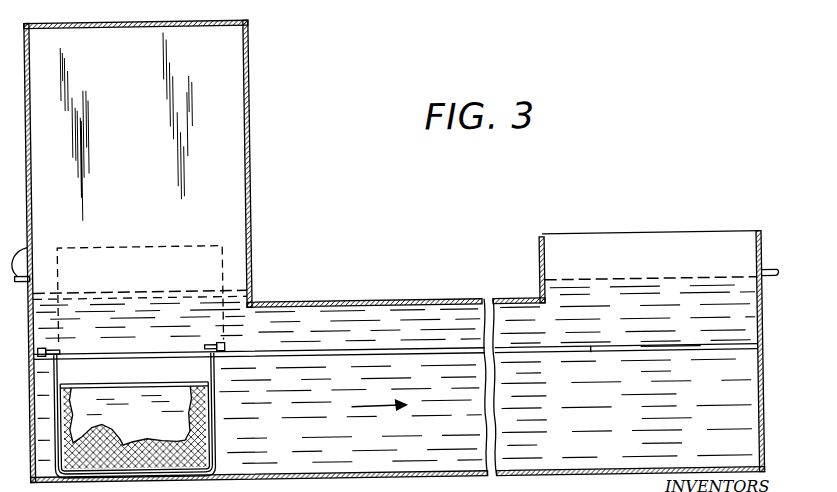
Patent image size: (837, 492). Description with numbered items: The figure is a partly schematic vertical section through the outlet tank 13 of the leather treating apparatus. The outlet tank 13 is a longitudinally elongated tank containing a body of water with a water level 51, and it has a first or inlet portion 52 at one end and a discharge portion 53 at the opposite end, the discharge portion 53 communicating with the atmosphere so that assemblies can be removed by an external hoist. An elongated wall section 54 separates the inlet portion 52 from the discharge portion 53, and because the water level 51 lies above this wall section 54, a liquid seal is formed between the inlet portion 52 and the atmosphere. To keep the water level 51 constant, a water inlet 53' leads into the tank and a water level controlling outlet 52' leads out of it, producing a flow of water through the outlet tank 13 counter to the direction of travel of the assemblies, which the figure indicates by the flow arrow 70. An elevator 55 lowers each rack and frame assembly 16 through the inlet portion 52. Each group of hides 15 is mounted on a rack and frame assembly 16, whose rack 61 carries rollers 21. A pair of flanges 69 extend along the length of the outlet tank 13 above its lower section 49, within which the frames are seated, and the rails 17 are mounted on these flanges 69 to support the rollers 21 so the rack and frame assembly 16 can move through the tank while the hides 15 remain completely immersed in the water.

The outlet tank 13 is at (253, 126).
The inlet portion 52 is at (127, 126).
The water level controlling outlet 52' is at (42, 249).
The elevator 55 is at (178, 244).
The water level 51 is at (236, 287).
The elongated wall section 54 is at (432, 300).
The lower section 49 is at (706, 385).
The discharge portion 53 is at (650, 253).
The water inlet 53' is at (777, 254).
The rack 61 is at (145, 340).
The flanges 69 is at (654, 356).
The rails 17 is at (598, 348).
The rollers 21 is at (59, 353).
The rack and frame assembly 16 is at (216, 401).
The hides 15 is at (153, 416).
The flow direction arrow 70 is at (375, 407).